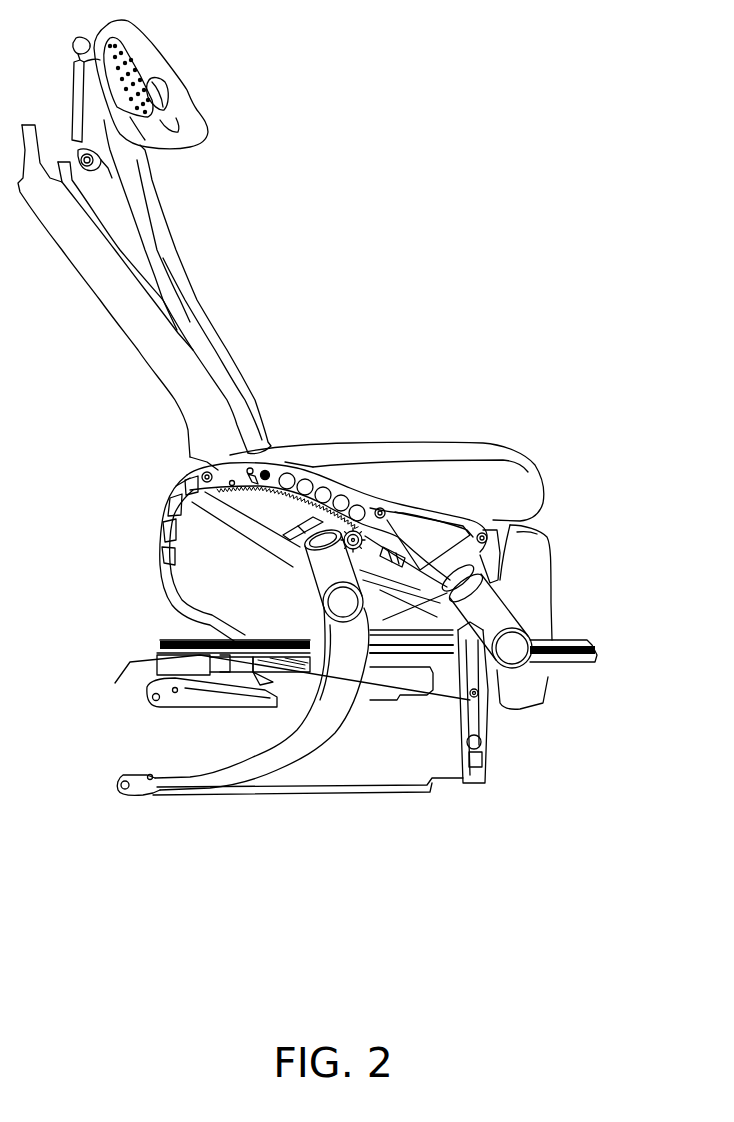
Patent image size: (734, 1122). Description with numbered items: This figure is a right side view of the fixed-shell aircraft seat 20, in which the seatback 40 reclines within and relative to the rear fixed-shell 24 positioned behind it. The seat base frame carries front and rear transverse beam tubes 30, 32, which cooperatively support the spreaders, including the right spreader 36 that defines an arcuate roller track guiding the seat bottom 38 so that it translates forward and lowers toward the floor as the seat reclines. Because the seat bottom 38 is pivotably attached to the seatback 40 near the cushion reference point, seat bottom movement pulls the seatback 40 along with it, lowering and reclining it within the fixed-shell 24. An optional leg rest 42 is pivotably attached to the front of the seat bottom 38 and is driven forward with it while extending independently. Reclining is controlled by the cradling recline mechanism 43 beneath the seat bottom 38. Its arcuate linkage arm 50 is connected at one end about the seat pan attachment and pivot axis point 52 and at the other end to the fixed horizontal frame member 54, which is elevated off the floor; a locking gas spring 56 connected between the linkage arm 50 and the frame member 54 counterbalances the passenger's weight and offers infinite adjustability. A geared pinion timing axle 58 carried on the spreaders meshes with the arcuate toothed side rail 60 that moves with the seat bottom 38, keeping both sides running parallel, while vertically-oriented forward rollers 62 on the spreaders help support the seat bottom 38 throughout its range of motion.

The fixed-shell aircraft seat 20 is at (512, 241).
The rear fixed-shell 24 is at (110, 275).
The seatback 40 is at (165, 235).
The seat pan attachment and pivot axis point 52 is at (192, 462).
The cradling recline mechanism 43 is at (176, 485).
The arcuate linkage arm 50 is at (163, 540).
The arcuate toothed side rail 60 is at (298, 468).
The geared pinion timing axle 58 is at (353, 531).
The seat bottom 38 is at (500, 470).
The forward rollers 62 is at (486, 534).
The right spreader 36 is at (440, 542).
The leg rest 42 is at (533, 603).
The front transverse beam tube 30 is at (513, 622).
The rear transverse beam tube 32 is at (330, 572).
The locking gas spring 56 is at (200, 632).
The fixed horizontal frame member 54 is at (163, 663).